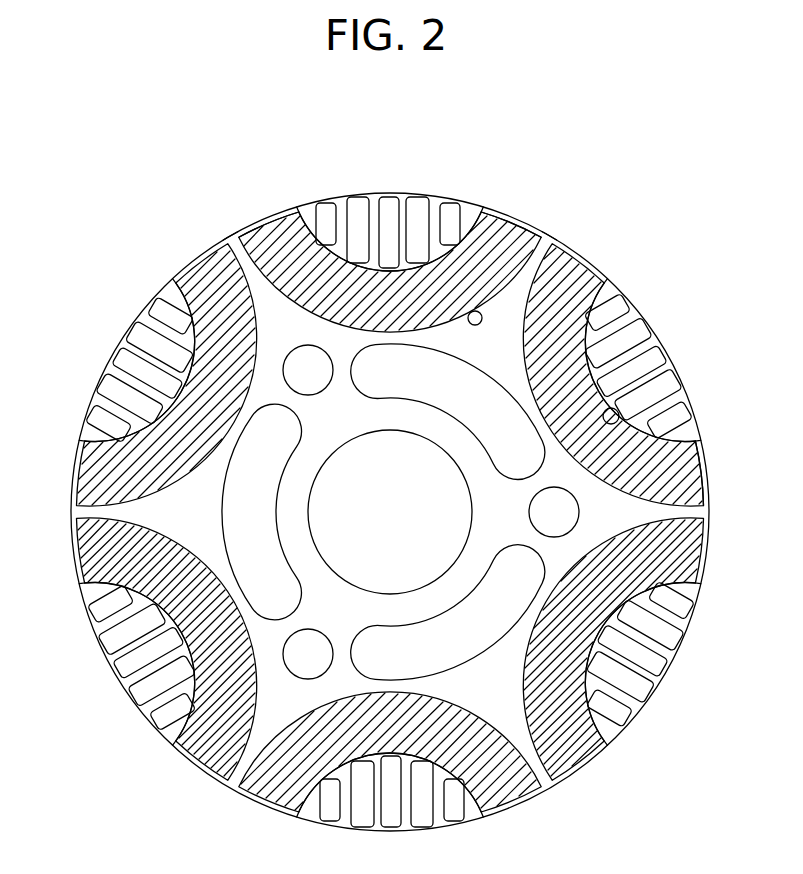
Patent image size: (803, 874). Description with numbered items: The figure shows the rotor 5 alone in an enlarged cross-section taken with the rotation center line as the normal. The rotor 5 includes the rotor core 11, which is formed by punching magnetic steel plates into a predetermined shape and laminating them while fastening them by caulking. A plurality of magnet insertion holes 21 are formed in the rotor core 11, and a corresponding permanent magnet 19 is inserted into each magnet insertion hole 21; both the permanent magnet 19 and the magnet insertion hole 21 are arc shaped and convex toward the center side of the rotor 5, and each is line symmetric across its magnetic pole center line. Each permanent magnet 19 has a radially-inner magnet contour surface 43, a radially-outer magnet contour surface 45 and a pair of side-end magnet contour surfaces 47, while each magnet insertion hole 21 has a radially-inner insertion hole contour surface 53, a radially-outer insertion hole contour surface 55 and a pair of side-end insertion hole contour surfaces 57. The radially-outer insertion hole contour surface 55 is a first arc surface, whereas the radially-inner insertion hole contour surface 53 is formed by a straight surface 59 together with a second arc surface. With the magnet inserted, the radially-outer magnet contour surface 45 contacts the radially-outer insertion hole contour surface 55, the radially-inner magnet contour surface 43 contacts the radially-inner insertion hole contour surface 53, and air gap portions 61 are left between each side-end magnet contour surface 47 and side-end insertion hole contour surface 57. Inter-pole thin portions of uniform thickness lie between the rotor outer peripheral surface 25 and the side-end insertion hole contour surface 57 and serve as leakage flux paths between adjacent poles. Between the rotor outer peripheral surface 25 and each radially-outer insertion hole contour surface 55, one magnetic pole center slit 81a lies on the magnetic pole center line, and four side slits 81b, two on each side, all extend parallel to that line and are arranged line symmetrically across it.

The rotor 5 is at (137, 167).
The rotor core 11 is at (135, 512).
The permanent magnet 19 is at (489, 256).
The magnet insertion hole 21 is at (592, 267).
The rotor outer peripheral surface 25 is at (394, 361).
The radially-inner magnet contour surface 43 is at (472, 310).
The radially-outer magnet contour surface 45 is at (353, 240).
The side-end magnet contour surface 47 is at (258, 224).
The radially-inner insertion hole contour surface 53 is at (688, 427).
The radially-outer insertion hole contour surface 55 is at (655, 405).
The side-end insertion hole contour surface 57 is at (580, 252).
The straight surface 59 is at (600, 325).
The air gap portion 61 is at (300, 224).
The magnetic pole center slit 81a is at (389, 205).
The side slit 81b is at (327, 210).